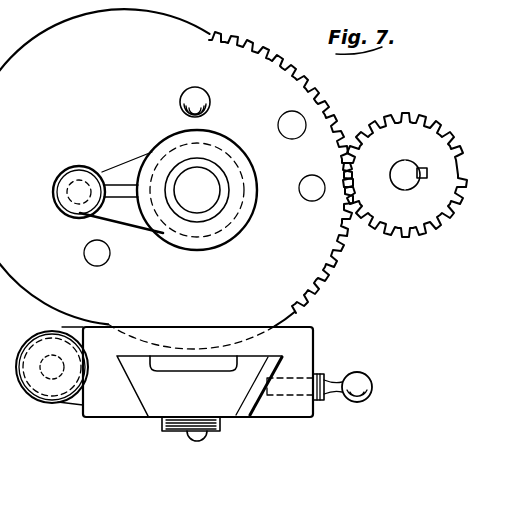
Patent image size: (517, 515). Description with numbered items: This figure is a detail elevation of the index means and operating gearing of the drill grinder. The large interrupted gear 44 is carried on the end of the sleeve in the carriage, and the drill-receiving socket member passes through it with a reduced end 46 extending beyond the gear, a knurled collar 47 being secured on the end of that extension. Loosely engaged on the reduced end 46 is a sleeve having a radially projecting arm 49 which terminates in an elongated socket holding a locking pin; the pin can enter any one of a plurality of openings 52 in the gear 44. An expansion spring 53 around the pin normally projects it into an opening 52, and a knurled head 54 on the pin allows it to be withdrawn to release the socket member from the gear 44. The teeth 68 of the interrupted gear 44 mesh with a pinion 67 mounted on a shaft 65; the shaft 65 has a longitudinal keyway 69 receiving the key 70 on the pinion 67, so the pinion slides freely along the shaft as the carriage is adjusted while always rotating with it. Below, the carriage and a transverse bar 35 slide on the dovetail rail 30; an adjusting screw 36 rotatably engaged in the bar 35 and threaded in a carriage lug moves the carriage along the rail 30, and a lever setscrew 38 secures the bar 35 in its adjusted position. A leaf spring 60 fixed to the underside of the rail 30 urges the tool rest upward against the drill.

The rail 30 is at (158, 395).
The transverse bar 35 is at (303, 340).
The adjusting screw 36 is at (57, 388).
The lever setscrew 38 is at (336, 380).
The interrupted gear 44 is at (147, 179).
The reduced end 46 is at (212, 215).
The knurled collar 47 is at (185, 251).
The radially projecting arm 49 is at (133, 217).
The openings 52 is at (292, 126).
The expansion spring 53 is at (100, 173).
The knurled head 54 is at (82, 204).
The leaf spring 60 is at (182, 424).
The shaft 65 is at (403, 170).
The pinion 67 is at (441, 198).
The teeth 68 is at (268, 48).
The keyway 69 is at (420, 161).
The key 70 is at (430, 174).